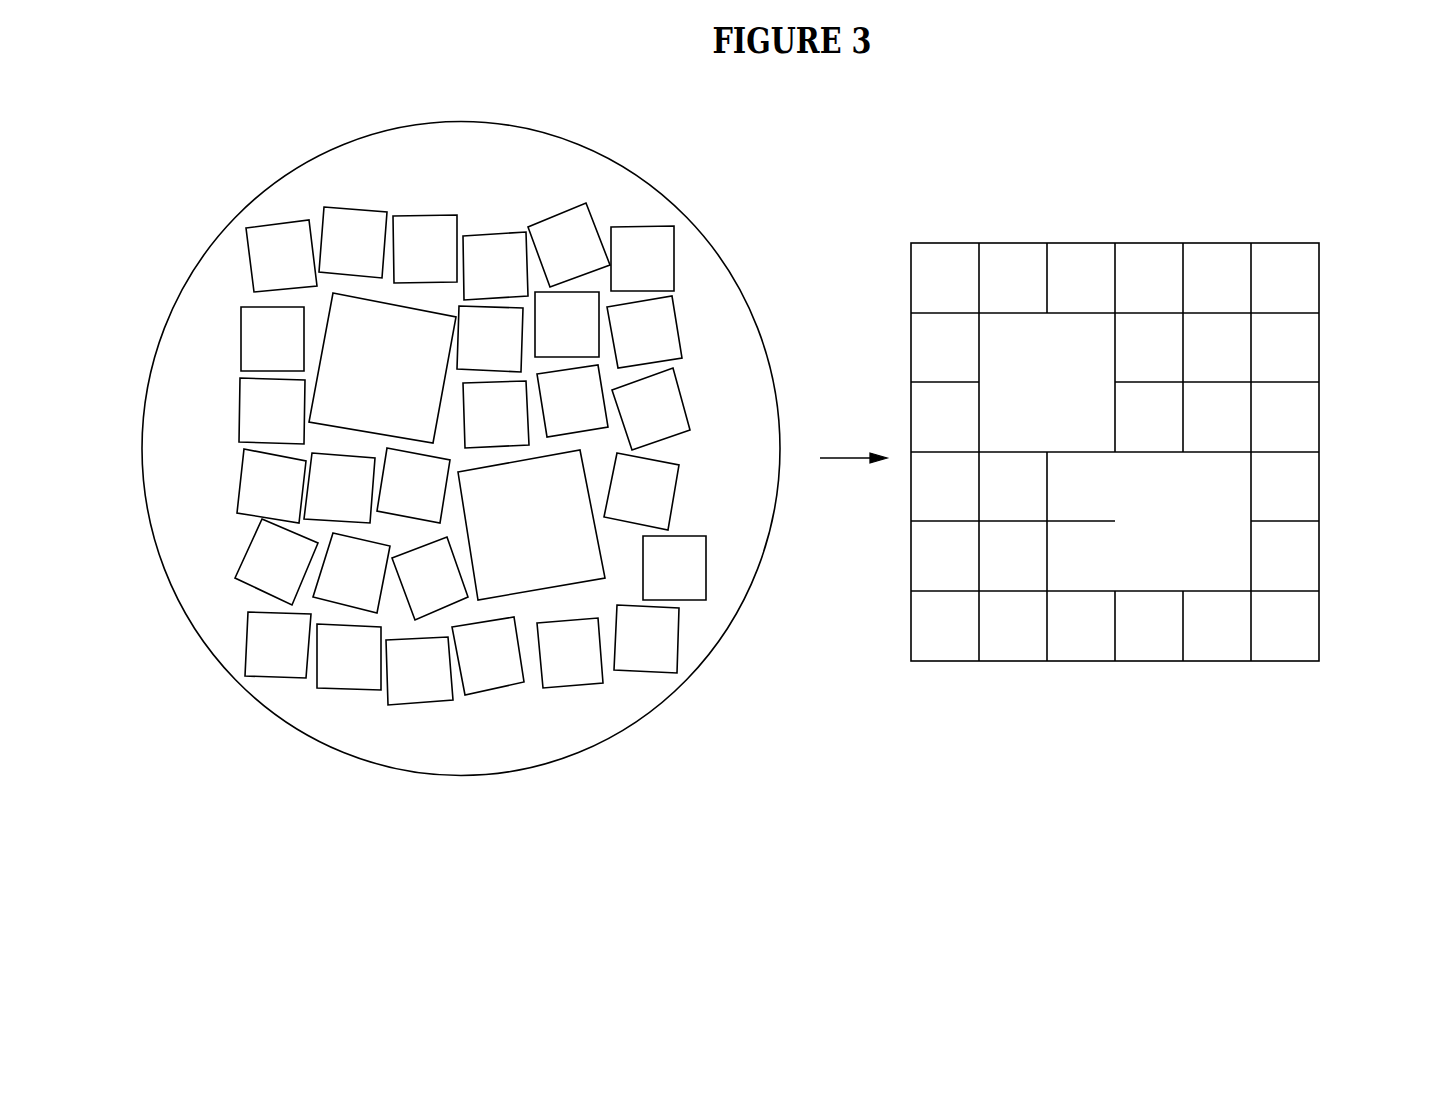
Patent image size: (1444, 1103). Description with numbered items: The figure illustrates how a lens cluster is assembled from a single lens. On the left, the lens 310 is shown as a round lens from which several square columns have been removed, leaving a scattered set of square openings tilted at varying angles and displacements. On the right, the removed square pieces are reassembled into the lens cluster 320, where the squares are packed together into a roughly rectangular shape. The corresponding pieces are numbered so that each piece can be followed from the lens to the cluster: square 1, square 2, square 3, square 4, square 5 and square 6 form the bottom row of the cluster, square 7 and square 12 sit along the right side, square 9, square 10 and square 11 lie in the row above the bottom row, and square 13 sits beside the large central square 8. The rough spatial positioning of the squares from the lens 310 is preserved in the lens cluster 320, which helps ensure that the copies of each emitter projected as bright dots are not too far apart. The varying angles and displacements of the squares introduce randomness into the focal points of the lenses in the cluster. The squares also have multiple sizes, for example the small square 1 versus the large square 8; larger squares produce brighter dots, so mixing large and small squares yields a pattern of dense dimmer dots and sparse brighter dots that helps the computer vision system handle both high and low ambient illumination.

The lens 310 is at (461, 511).
The lens cluster 320 is at (1106, 514).
The square 1 is at (955, 639).
The square 2 is at (882, 648).
The square 3 is at (806, 651).
The square 4 is at (739, 656).
The square 5 is at (670, 649).
The square 6 is at (600, 643).
The square 7 is at (969, 568).
The square 8 is at (826, 525).
The square 9 is at (742, 578).
The square 10 is at (674, 573).
The square 11 is at (601, 562).
The square 12 is at (955, 491).
The square 13 is at (740, 485).